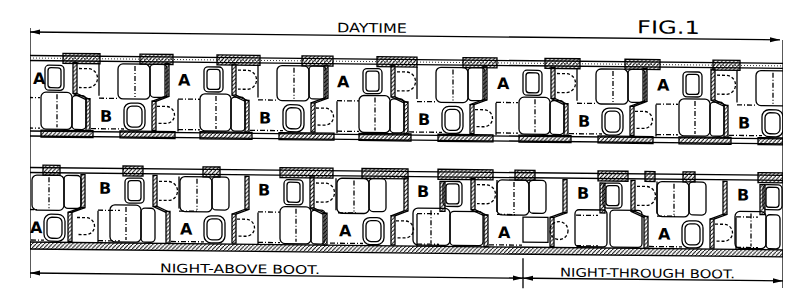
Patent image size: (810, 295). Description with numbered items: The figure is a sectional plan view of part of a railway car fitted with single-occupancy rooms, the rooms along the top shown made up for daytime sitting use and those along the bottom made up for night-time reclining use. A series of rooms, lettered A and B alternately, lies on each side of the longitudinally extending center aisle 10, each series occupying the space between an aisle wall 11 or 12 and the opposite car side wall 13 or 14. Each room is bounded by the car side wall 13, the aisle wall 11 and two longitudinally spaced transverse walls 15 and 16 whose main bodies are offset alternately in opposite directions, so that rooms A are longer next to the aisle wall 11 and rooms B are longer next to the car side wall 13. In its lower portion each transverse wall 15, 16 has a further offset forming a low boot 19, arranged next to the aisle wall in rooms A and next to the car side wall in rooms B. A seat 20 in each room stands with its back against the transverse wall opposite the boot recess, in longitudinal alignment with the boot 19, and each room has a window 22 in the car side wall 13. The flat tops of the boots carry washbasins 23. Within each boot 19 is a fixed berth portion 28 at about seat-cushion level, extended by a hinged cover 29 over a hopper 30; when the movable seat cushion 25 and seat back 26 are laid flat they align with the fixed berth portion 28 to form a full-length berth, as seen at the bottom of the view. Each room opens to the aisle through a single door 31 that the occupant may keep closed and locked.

The center aisle 10 is at (380, 152).
The aisle wall 11 is at (458, 163).
The aisle wall 12 is at (690, 168).
The car side wall 13 is at (331, 55).
The car side wall 14 is at (468, 245).
The transverse wall 15 is at (178, 111).
The transverse wall 16 is at (101, 82).
The boot 19 is at (238, 54).
The seat 20 is at (465, 72).
The window 22 is at (188, 55).
The washbasin 23 is at (125, 126).
The seat cushion 25 is at (599, 234).
The seat back 26 is at (629, 234).
The fixed berth portion 28 is at (542, 229).
The hinged cover 29 is at (571, 224).
The hopper 30 is at (406, 244).
The door 31 is at (536, 136).